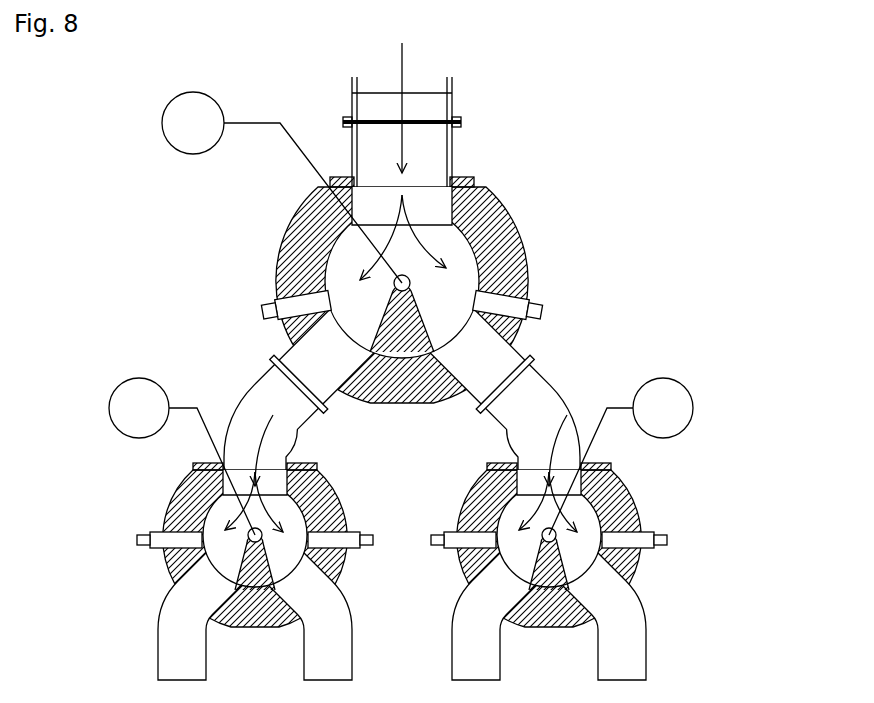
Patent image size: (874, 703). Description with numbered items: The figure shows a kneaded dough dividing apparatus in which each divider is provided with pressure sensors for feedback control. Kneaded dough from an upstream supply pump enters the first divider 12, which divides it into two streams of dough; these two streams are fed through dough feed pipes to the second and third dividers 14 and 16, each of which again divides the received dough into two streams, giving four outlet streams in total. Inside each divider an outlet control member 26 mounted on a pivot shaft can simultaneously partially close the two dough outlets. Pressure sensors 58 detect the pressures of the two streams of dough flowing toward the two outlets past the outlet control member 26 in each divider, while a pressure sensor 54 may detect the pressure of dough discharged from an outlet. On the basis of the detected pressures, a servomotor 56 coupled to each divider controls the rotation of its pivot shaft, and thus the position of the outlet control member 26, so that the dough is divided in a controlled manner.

The first divider 12 is at (527, 247).
The second divider 14 is at (163, 516).
The third divider 16 is at (638, 513).
The outlet control member 26 is at (424, 288).
The pressure sensor 54 is at (260, 300).
The servomotor 56 is at (182, 93).
The pressure sensor 58 is at (550, 301).